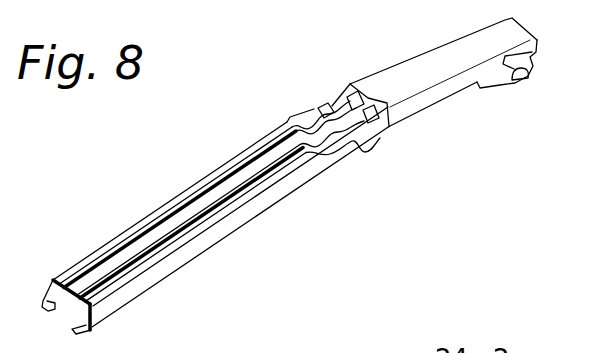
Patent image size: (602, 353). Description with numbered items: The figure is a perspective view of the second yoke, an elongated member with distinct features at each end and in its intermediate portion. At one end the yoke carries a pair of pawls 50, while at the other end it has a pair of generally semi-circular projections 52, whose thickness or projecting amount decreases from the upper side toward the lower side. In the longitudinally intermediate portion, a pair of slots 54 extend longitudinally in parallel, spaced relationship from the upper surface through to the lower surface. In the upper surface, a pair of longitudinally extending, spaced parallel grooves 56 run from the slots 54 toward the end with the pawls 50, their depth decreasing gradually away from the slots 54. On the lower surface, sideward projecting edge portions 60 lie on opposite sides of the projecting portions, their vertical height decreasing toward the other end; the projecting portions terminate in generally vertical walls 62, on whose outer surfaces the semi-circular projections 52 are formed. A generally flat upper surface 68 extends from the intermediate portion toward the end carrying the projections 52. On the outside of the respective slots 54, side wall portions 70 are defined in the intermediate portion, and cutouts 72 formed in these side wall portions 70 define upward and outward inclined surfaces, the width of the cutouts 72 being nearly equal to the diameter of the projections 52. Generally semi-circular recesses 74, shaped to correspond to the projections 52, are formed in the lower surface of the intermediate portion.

The pawls 50 is at (52, 312).
The semi-circular projections 52 is at (522, 80).
The slots 54 is at (350, 93).
The grooves 56 is at (137, 240).
The sideward projecting edge portions 60 is at (443, 98).
The vertical walls 62 is at (530, 57).
The flat upper surface 68 is at (437, 60).
The side wall portions 70 is at (318, 112).
The cutouts 72 is at (325, 106).
The semi-circular recesses 74 is at (362, 152).